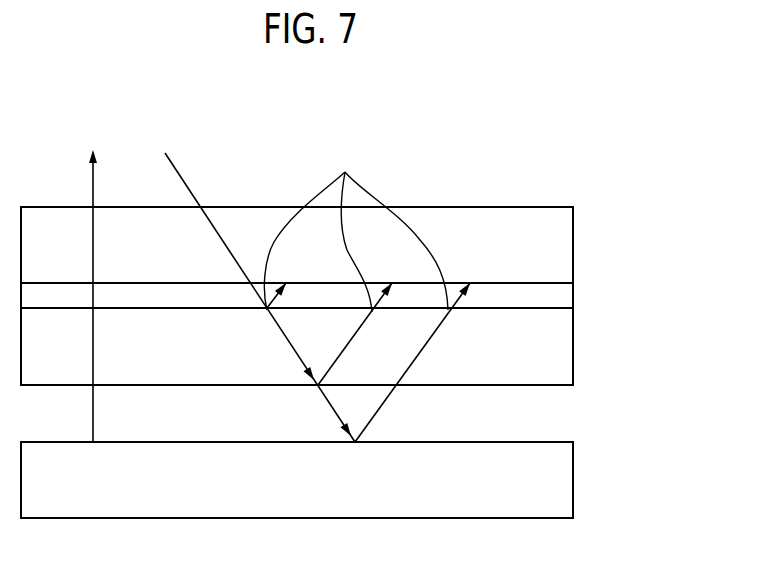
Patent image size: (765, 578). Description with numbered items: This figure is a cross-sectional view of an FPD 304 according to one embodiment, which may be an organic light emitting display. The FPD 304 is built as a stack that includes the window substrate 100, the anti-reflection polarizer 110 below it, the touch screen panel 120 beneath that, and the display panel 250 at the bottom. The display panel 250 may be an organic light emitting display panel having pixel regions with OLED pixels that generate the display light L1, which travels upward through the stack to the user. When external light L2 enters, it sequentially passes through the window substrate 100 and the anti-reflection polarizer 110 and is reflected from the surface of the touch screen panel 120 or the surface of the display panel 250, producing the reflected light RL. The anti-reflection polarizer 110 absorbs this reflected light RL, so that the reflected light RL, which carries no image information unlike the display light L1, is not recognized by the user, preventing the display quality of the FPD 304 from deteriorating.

The window substrate 100 is at (568, 253).
The anti-reflection polarizer 110 is at (568, 298).
The touch screen panel 120 is at (568, 352).
The display panel 250 is at (331, 480).
The FPD 304 is at (361, 362).
The display light L1 is at (93, 190).
The external light L2 is at (190, 190).
The reflected light RL is at (356, 227).